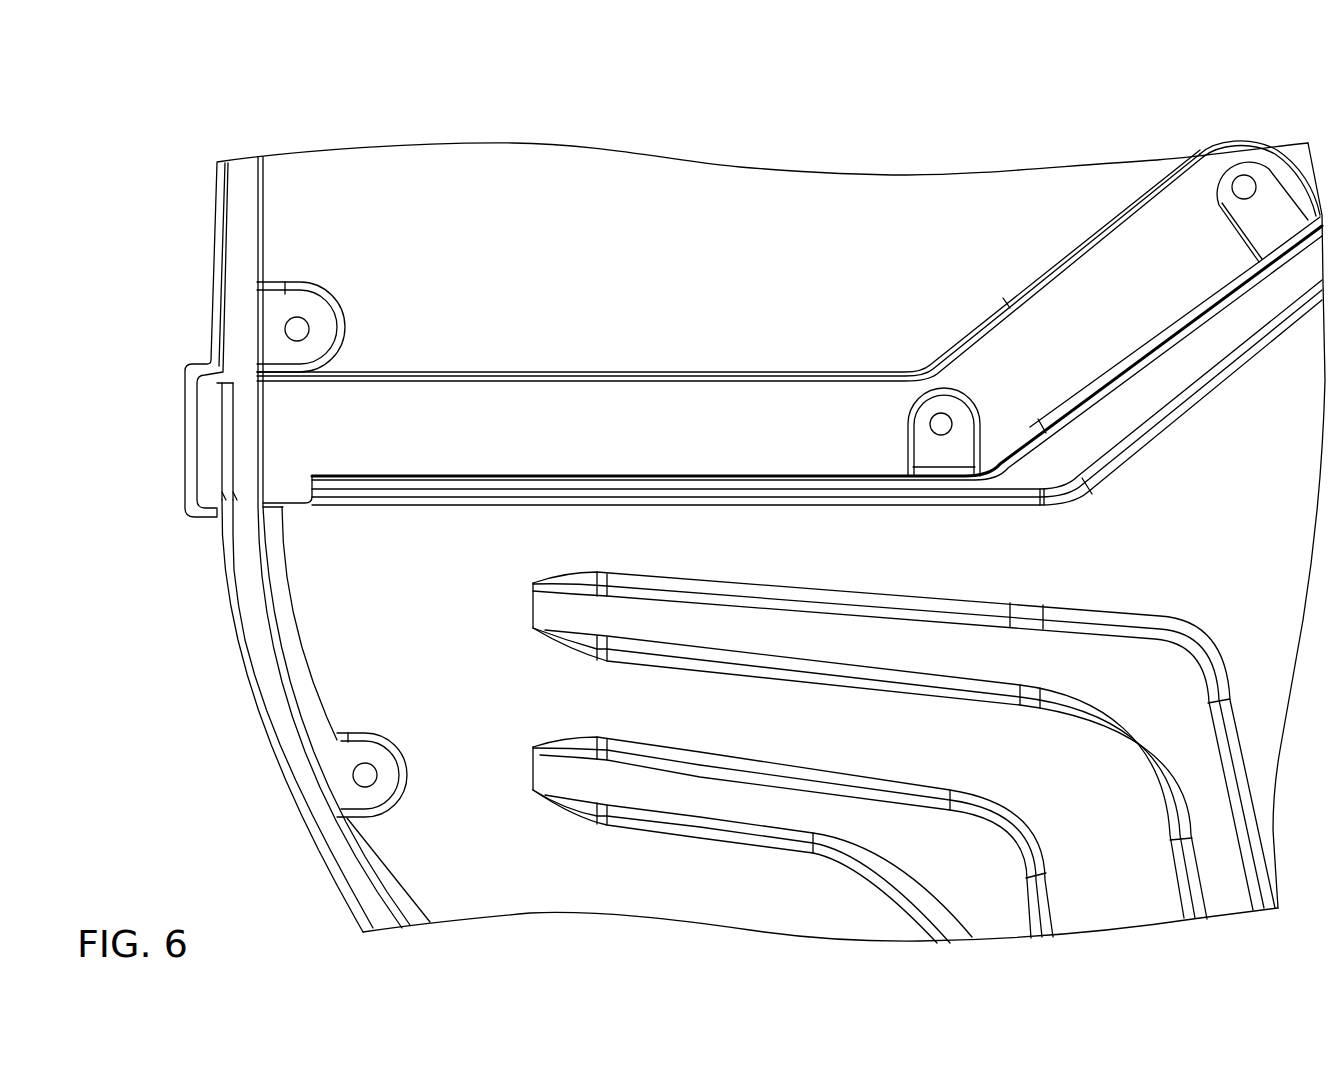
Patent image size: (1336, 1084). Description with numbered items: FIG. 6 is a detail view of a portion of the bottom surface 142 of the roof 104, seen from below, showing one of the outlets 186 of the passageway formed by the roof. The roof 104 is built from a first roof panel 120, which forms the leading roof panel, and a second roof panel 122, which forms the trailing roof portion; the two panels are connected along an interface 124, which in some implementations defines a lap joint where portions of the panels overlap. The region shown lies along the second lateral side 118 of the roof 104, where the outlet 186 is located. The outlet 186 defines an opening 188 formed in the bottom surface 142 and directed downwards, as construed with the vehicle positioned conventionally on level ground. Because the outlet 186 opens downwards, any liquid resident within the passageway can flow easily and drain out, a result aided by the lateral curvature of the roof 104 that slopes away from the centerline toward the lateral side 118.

The roof 104 is at (1002, 96).
The second lateral side 118 is at (232, 622).
The first roof panel 120 is at (565, 242).
The second roof panel 122 is at (570, 825).
The interface 124 is at (418, 410).
The bottom surface 142 is at (473, 793).
The outlet 186 is at (212, 458).
The opening 188 is at (207, 422).